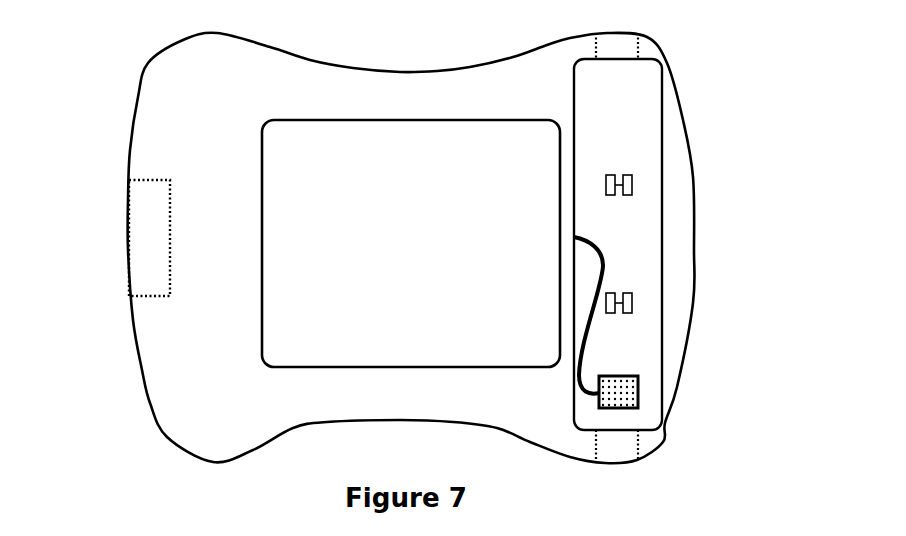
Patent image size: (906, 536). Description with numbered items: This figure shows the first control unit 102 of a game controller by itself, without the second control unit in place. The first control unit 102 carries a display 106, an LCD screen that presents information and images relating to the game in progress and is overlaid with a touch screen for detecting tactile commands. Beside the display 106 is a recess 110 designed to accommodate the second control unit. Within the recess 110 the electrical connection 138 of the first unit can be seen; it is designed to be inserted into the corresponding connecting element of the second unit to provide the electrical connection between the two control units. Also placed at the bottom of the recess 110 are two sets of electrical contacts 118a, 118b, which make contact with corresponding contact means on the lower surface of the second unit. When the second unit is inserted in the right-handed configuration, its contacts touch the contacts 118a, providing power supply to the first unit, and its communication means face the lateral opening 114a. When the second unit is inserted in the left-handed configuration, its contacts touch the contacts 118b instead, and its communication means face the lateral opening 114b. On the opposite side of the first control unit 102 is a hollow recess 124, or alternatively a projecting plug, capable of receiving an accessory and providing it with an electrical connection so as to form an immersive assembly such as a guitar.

The first control unit 102 is at (190, 360).
The display 106 is at (430, 242).
The recess 110 is at (632, 113).
The lateral opening 114a is at (608, 45).
The lateral opening 114b is at (610, 448).
The electrical contacts 118a is at (633, 297).
The electrical contacts 118b is at (615, 186).
The hollow recess 124 is at (153, 234).
The electrical connection 138 is at (638, 392).